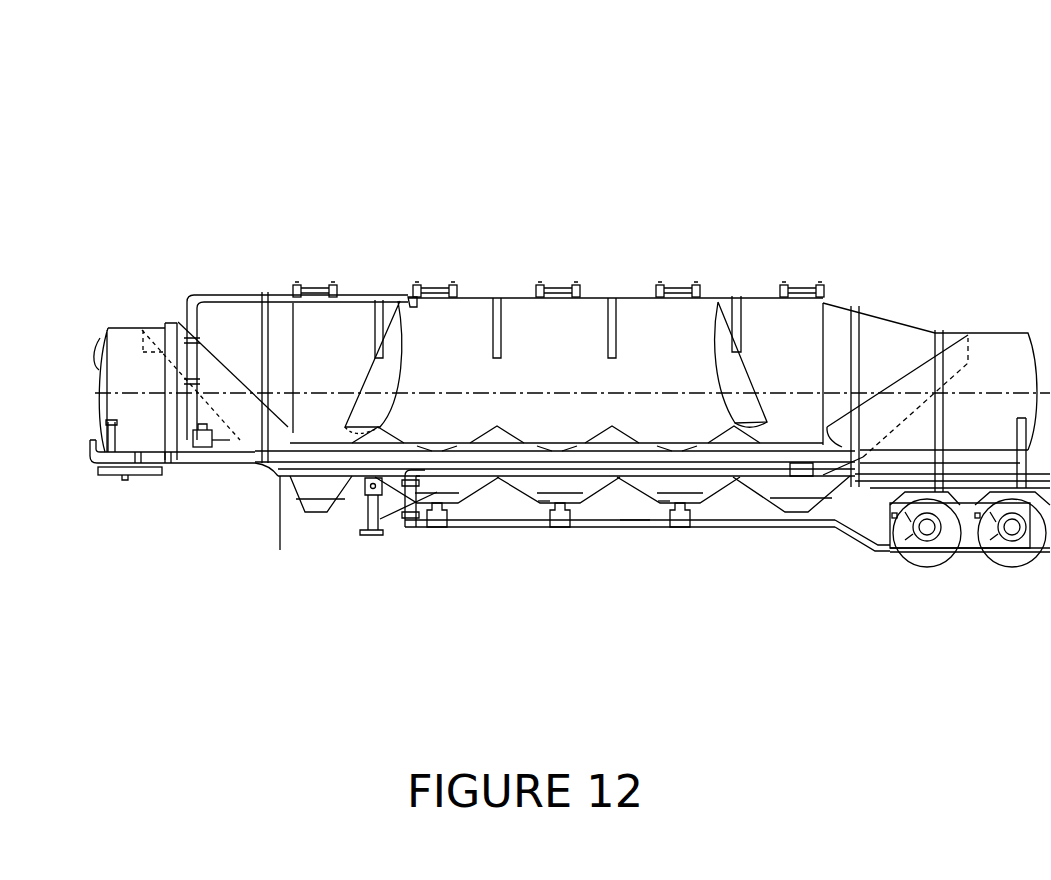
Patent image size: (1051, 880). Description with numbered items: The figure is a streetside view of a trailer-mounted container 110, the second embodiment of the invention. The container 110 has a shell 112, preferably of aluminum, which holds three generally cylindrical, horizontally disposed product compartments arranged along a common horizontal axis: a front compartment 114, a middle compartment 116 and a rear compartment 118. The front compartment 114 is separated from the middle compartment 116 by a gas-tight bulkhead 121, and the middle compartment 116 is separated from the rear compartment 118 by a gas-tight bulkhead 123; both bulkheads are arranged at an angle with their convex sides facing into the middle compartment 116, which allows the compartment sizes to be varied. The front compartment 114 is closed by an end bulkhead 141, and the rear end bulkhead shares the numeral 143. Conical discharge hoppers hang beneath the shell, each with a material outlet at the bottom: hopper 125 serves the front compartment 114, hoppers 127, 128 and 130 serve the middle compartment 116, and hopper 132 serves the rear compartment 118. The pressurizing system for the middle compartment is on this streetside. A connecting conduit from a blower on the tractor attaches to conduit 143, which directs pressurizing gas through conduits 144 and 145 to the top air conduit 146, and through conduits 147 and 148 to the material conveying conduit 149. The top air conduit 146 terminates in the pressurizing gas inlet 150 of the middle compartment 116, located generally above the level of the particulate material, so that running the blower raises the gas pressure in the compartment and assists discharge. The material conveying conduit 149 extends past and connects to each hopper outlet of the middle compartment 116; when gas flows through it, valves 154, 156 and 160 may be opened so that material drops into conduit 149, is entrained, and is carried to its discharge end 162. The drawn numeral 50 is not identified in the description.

The trailer-mounted container 110 is at (501, 195).
The shell 112 is at (910, 318).
The front compartment 114 is at (335, 325).
The middle compartment 116 is at (560, 335).
The rear compartment 118 is at (767, 320).
The gas-tight bulkhead 121 is at (397, 383).
The gas-tight bulkhead 123 is at (708, 357).
The conical discharge hopper 125 is at (317, 511).
The conical discharge hopper 127 is at (489, 540).
The conical discharge hopper 128 is at (614, 537).
The conical discharge hopper 130 is at (736, 538).
The conical discharge hopper 132 is at (810, 480).
The end bulkhead 141 is at (218, 366).
The conduit 143 is at (87, 460).
The conduit 144 is at (208, 450).
The conduit 145 is at (192, 320).
The top air conduit 146 is at (370, 285).
The conduit 147 is at (300, 462).
The conduit 148 is at (388, 537).
The material conveying conduit 149 is at (633, 524).
The pressurizing gas inlet 150 is at (422, 317).
The valve 154 is at (437, 542).
The valve 156 is at (562, 542).
The valve 160 is at (681, 542).
The discharge end 162 is at (1038, 553).
The discharge pipe 50 is at (508, 527).